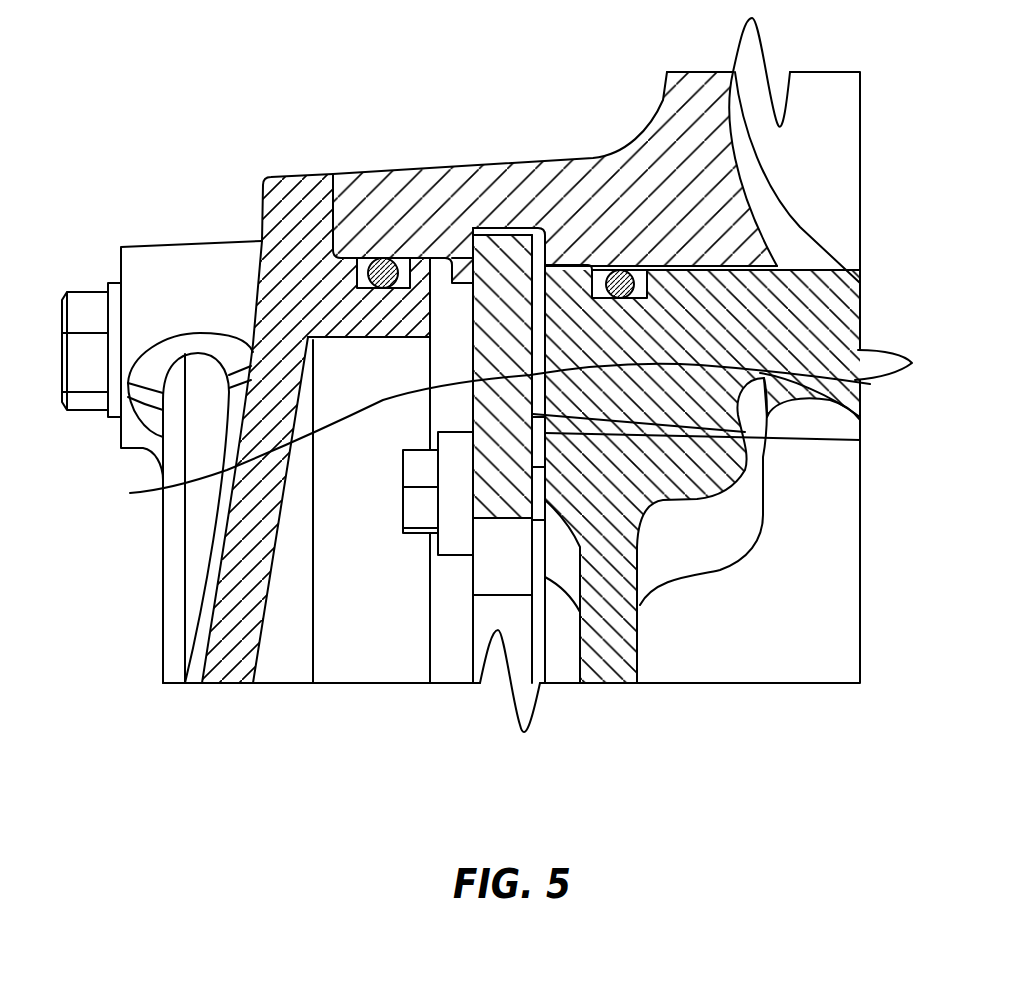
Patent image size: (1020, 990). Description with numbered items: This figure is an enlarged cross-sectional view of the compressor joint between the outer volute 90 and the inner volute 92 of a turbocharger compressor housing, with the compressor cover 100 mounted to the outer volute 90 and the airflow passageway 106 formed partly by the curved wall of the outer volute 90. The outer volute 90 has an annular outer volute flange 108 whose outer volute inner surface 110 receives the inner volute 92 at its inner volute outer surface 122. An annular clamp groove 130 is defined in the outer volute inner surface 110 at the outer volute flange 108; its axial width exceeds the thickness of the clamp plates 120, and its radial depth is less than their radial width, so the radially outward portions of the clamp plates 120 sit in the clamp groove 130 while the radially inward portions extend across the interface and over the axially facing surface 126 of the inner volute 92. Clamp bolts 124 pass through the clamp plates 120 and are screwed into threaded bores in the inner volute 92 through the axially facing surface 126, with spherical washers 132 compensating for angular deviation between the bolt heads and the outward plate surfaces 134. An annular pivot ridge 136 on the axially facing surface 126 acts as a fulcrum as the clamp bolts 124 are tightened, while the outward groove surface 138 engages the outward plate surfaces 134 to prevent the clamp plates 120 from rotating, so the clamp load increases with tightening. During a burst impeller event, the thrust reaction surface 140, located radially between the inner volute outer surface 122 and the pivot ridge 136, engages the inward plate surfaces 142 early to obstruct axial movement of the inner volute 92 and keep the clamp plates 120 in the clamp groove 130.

The outer volute 90 is at (680, 72).
The inner volute 92 is at (820, 337).
The compressor cover 100 is at (147, 260).
The airflow passageway 106 is at (820, 94).
The outer volute flange 108 is at (384, 170).
The outer volute inner surface 110 is at (362, 262).
The clamp plates 120 is at (492, 230).
The inner volute outer surface 122 is at (733, 272).
The clamp bolts 124 is at (415, 508).
The axially facing surface 126 is at (497, 632).
The clamp groove 130 is at (506, 222).
The spherical washers 132 is at (462, 530).
The outward plate surfaces 134 is at (484, 436).
The pivot ridge 136 is at (870, 384).
The outward groove surface 138 is at (493, 247).
The thrust reaction surface 140 is at (527, 257).
The inward plate surfaces 142 is at (860, 440).